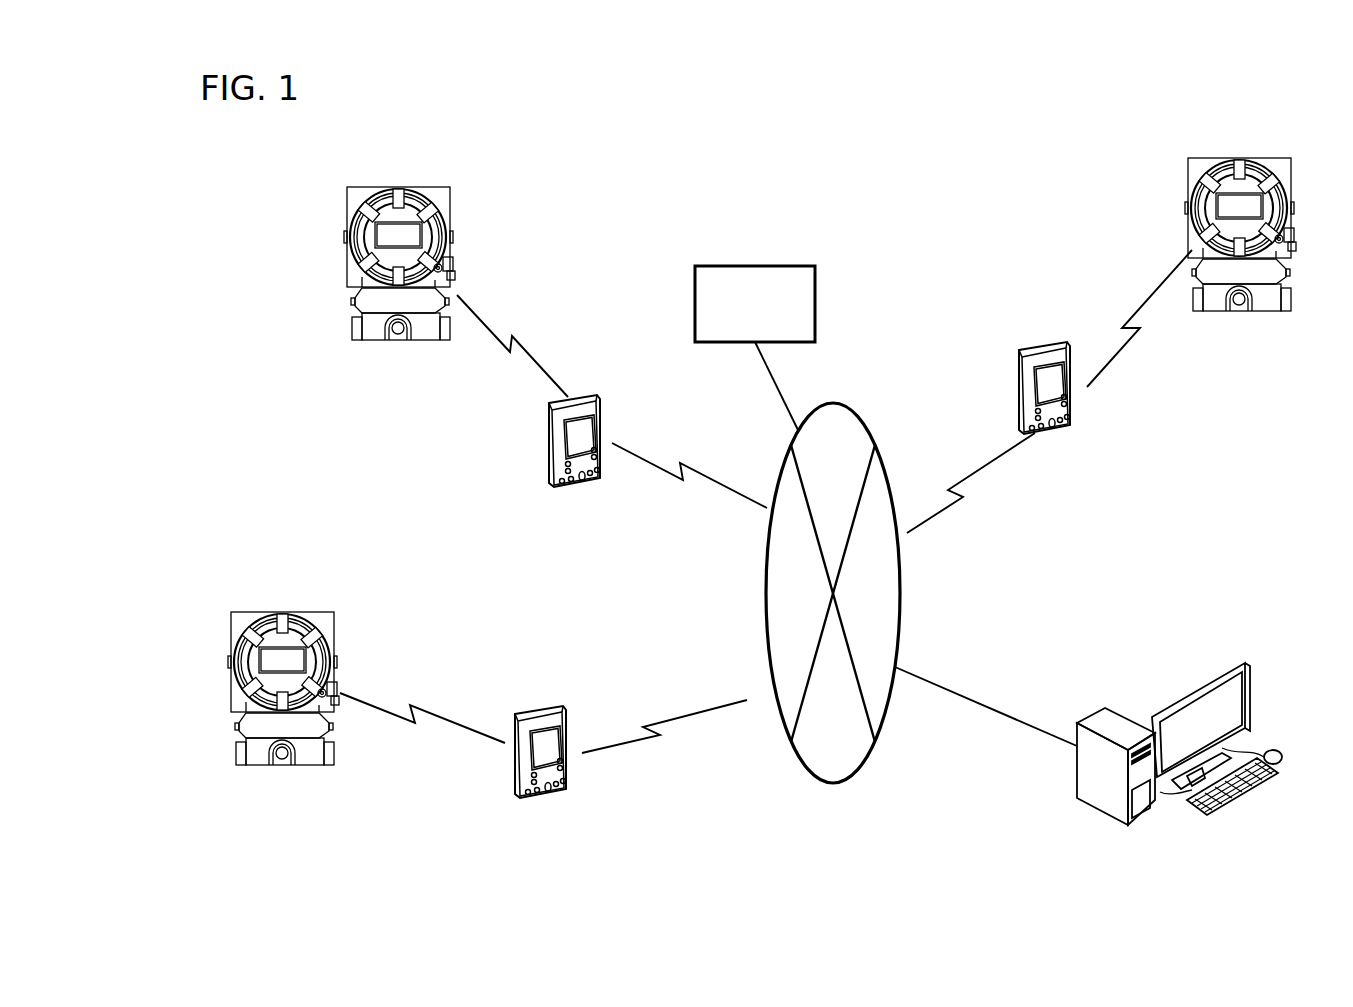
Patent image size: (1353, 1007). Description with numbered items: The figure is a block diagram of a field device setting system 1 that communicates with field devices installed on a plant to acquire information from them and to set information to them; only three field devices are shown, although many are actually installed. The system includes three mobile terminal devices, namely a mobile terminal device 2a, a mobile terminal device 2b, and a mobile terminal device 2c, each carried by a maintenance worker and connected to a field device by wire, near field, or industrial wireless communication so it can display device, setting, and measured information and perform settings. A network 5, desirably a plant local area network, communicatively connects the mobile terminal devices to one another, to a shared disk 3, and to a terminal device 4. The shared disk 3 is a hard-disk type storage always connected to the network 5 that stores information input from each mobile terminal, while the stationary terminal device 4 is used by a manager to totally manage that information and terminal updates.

The field device setting system 1 is at (971, 166).
The mobile terminal device 2a is at (543, 708).
The mobile terminal device 2b is at (592, 397).
The mobile terminal device 2c is at (1032, 342).
The shared disk 3 is at (777, 266).
The terminal device 4 is at (1117, 718).
The network 5 is at (868, 425).